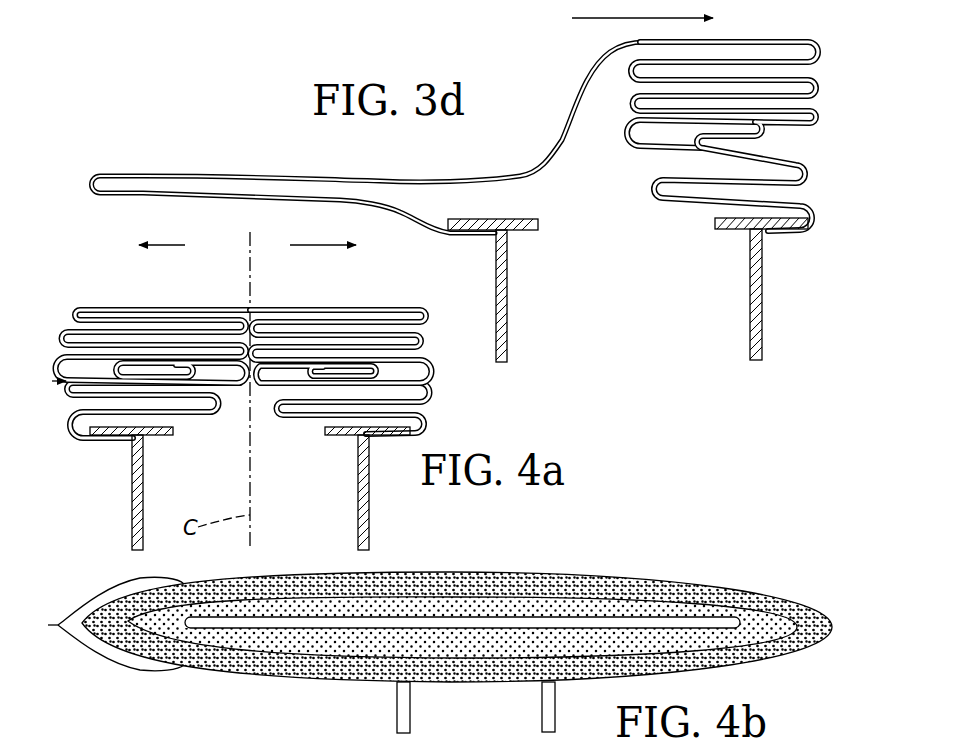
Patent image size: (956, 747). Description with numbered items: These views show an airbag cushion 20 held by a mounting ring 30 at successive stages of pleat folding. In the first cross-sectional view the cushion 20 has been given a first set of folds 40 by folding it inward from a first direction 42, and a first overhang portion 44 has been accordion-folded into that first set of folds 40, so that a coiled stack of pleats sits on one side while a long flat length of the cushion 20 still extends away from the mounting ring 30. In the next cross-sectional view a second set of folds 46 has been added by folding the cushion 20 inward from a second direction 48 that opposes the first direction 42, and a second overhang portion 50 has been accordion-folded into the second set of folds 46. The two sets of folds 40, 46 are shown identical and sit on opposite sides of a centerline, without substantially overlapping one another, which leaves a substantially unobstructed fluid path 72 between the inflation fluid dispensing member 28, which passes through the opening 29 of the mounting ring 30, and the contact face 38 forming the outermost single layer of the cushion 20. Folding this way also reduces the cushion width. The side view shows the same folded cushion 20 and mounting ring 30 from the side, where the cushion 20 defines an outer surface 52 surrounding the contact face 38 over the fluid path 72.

In FIG. 3D, the cushion 20 is at (142, 185).
In FIG. 4A, the cushion 20 is at (388, 305).
In FIG. 4B, the cushion 20 is at (610, 583).
In FIG. 4B, the inflation fluid dispensing member 28 is at (472, 743).
In FIG. 3D, the opening 29 is at (540, 227).
In FIG. 4A, the opening 29 is at (323, 434).
In FIG. 3D, the mounting ring 30 is at (762, 298).
In FIG. 4A, the mounting ring 30 is at (369, 505).
In FIG. 4B, the mounting ring 30 is at (410, 704).
In FIG. 4A, the contact face 38 is at (325, 305).
In FIG. 4B, the contact face 38 is at (510, 572).
In FIG. 3D, the first set of folds 40 is at (816, 103).
In FIG. 4A, the first set of folds 40 is at (437, 358).
In FIG. 3D, the first direction 42 is at (600, 19).
In FIG. 4A, the first direction 42 is at (290, 245).
In FIG. 3D, the first overhang portion 44 is at (728, 136).
In FIG. 4A, the first overhang portion 44 is at (345, 375).
In FIG. 4A, the second set of folds 46 is at (46, 383).
In FIG. 4A, the second direction 48 is at (185, 245).
In FIG. 4A, the second overhang portion 50 is at (137, 372).
In FIG. 4B, the outer surface 52 is at (103, 624).
In FIG. 4A, the fluid path 72 is at (238, 414).